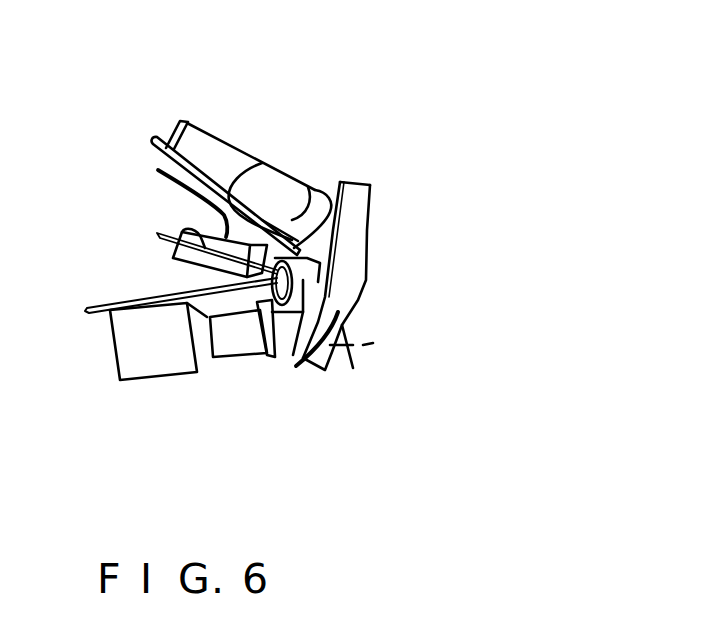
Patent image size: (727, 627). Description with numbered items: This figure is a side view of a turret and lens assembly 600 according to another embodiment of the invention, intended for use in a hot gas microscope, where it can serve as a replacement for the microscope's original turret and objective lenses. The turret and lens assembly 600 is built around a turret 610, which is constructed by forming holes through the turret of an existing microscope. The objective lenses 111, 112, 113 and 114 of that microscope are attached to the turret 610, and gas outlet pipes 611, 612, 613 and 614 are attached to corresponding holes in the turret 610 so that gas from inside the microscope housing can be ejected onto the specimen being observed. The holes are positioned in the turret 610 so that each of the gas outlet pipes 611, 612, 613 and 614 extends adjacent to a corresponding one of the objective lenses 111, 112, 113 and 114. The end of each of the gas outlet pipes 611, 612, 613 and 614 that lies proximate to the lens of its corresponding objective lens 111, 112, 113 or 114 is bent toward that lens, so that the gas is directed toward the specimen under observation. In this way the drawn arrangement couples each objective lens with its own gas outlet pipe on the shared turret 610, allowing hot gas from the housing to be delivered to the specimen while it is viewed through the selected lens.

The turret and lens assembly 600 is at (446, 226).
The objective lens 111 is at (140, 355).
The objective lens 112 is at (203, 146).
The objective lens 113 is at (158, 170).
The objective lens 114 is at (318, 275).
The turret 610 is at (303, 358).
The gas outlet pipe 611 is at (250, 287).
The gas outlet pipe 612 is at (262, 162).
The gas outlet pipe 613 is at (195, 231).
The gas outlet pipe 614 is at (240, 284).